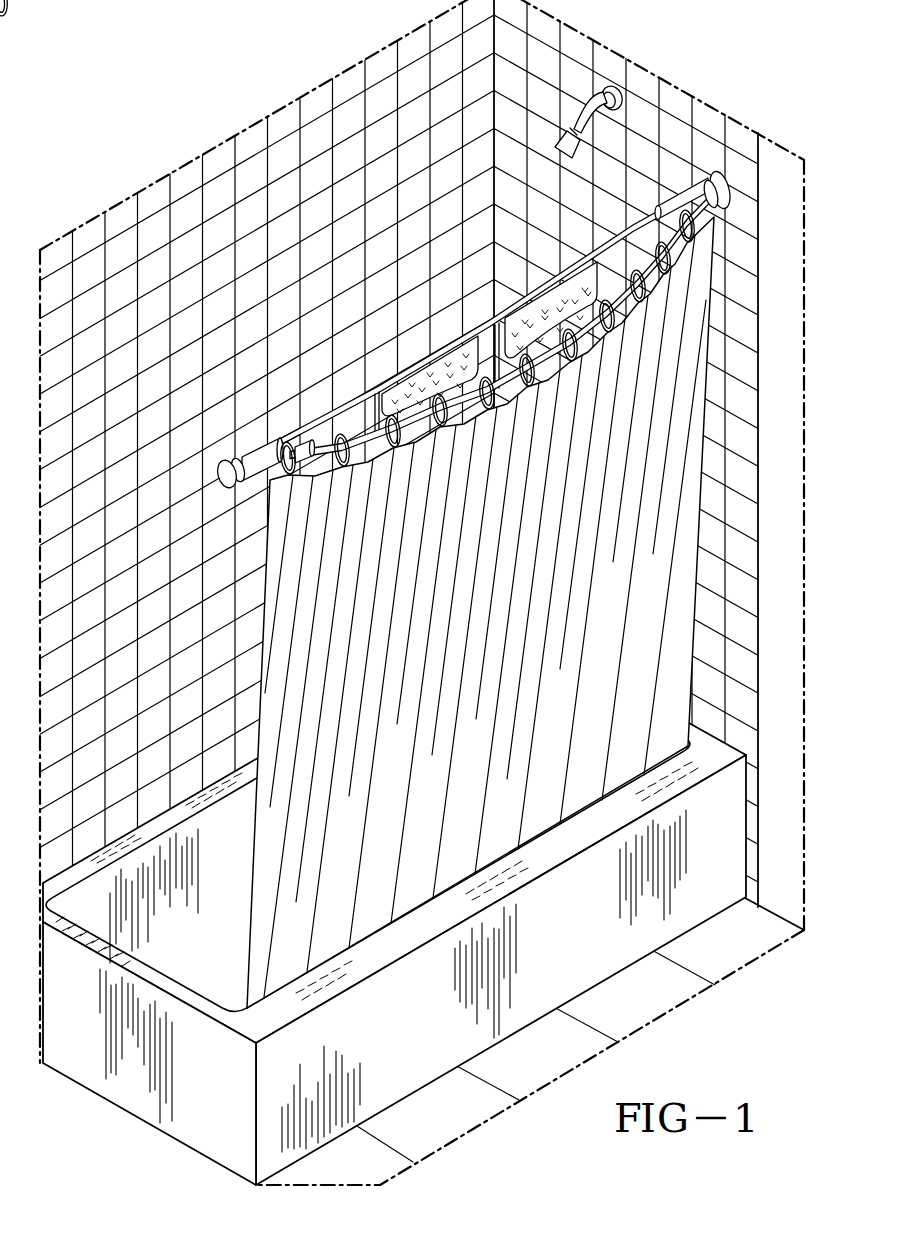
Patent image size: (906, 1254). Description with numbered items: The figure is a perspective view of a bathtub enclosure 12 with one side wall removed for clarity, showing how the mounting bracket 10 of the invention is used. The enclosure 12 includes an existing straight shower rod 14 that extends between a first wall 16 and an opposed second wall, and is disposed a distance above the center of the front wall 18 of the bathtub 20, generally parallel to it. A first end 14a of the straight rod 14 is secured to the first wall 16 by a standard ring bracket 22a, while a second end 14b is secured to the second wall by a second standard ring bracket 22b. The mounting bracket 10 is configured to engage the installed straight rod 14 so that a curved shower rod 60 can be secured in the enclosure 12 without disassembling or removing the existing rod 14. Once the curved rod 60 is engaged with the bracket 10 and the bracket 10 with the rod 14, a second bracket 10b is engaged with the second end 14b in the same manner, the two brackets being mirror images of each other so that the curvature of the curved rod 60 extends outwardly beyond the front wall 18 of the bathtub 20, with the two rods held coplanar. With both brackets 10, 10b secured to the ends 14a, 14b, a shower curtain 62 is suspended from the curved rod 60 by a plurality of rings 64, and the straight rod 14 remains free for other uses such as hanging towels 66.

The mounting bracket 10 is at (398, 274).
The second bracket 10b is at (234, 447).
The bathtub enclosure 12 is at (693, 944).
The straight shower rod 14 is at (440, 314).
The first end 14a is at (657, 218).
The second end 14b is at (286, 446).
The first wall 16 is at (645, 112).
The front wall 18 is at (394, 901).
The bathtub 20 is at (554, 969).
The ring bracket 22a is at (717, 177).
The second ring bracket 22b is at (224, 488).
The curved shower rod 60 is at (514, 390).
The shower curtain 62 is at (528, 631).
The rings 64 is at (530, 388).
The towels 66 is at (546, 303).